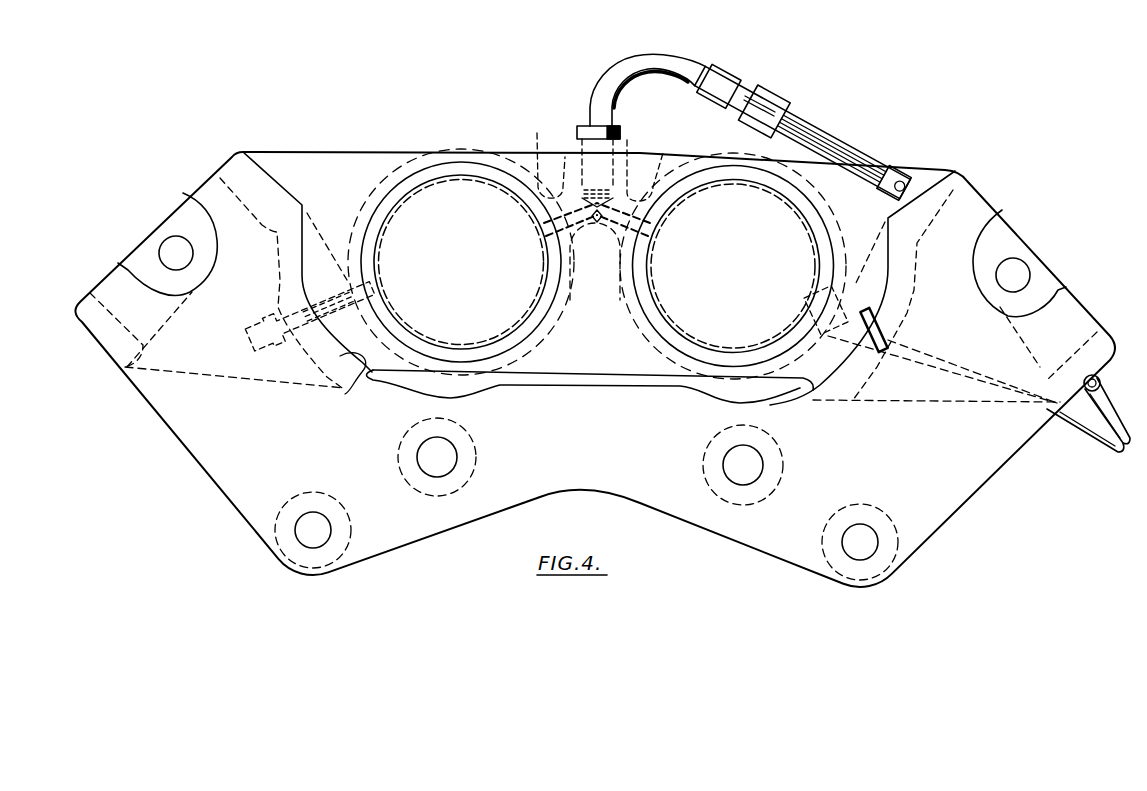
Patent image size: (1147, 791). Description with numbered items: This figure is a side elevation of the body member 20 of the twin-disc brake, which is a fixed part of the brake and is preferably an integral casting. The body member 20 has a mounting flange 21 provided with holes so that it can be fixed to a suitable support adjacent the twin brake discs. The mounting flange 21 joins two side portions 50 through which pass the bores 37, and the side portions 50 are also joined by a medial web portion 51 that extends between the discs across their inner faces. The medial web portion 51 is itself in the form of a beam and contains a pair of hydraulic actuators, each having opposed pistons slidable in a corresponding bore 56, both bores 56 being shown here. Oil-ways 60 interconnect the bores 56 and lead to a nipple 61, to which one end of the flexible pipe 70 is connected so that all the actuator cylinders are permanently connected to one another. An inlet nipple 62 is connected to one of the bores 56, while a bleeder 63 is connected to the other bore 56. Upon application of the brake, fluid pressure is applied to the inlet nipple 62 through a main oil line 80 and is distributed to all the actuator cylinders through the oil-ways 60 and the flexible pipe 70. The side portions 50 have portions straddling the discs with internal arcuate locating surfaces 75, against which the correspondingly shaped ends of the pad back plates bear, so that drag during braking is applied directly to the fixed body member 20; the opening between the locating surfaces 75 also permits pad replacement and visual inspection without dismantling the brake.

The body member 20 is at (961, 505).
The mounting flange 21 is at (572, 492).
The bores 37 is at (162, 250).
The side portions 50 is at (120, 250).
The medial web portion 51 is at (459, 151).
The bores 56 is at (427, 178).
The oil-ways 60 is at (539, 148).
The nipple 61 is at (582, 136).
The inlet nipple 62 is at (890, 329).
The bleeder 63 is at (276, 313).
The flexible pipe 70 is at (847, 135).
The internal arcuate locating surfaces 75 is at (362, 372).
The main oil line 80 is at (1080, 433).